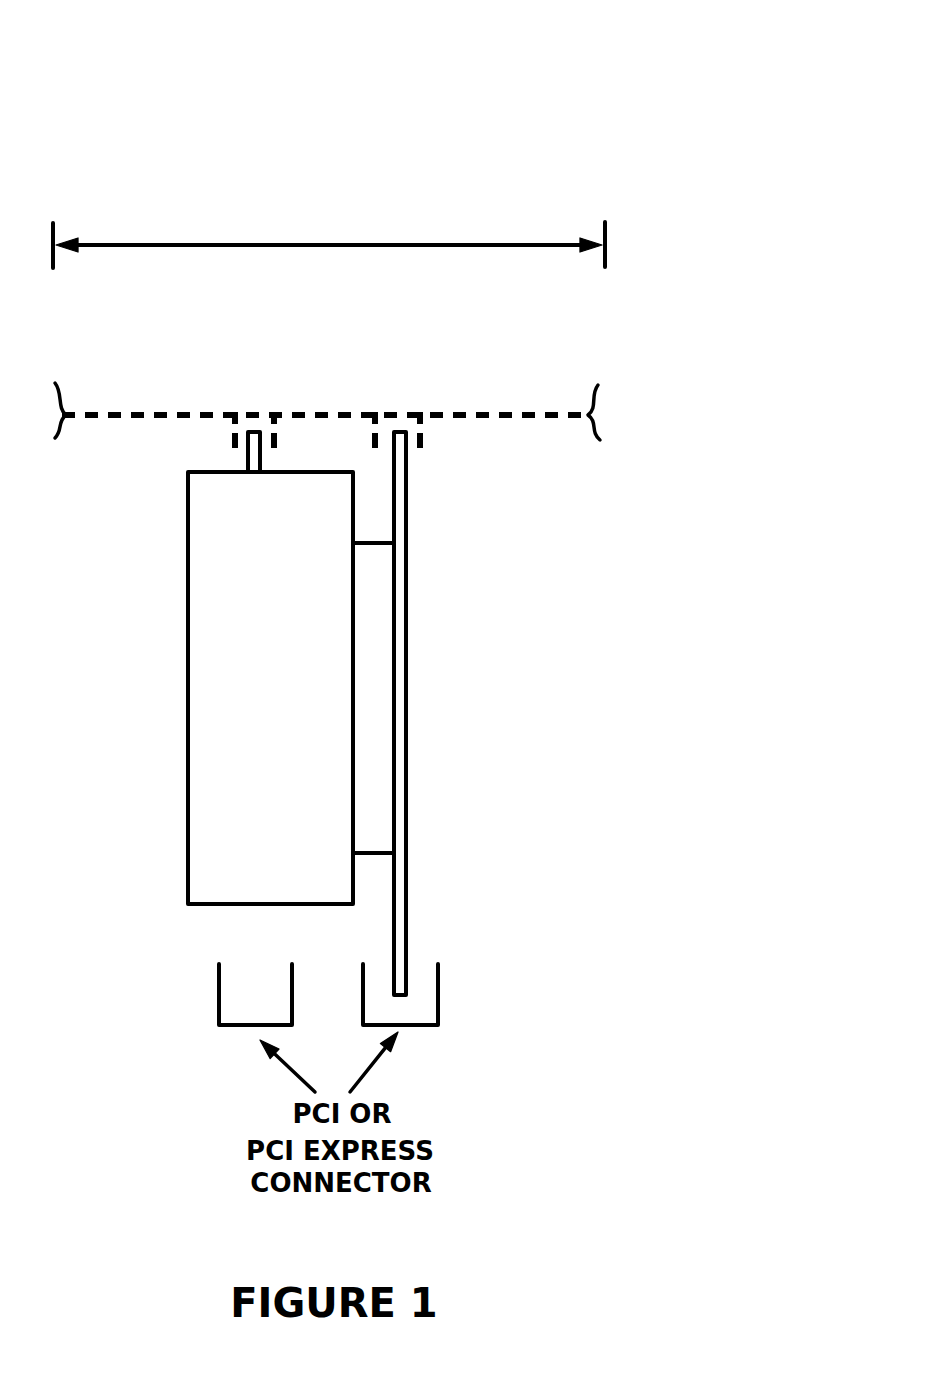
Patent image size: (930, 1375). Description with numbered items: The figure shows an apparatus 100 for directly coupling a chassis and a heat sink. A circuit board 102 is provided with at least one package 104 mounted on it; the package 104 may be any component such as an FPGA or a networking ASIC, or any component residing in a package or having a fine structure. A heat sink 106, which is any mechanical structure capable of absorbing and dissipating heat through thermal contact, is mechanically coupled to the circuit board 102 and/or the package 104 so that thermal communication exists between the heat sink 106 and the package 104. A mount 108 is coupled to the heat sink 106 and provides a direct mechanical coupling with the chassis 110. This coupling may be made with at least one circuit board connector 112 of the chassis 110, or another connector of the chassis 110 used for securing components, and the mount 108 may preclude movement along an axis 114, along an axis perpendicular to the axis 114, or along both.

The apparatus 100 is at (760, 97).
The circuit board 102 is at (426, 511).
The package 104 is at (378, 740).
The heat sink 106 is at (188, 645).
The mount 108 is at (225, 460).
The chassis 110 is at (510, 412).
The circuit board connector 112 is at (216, 406).
The axis 114 is at (164, 207).